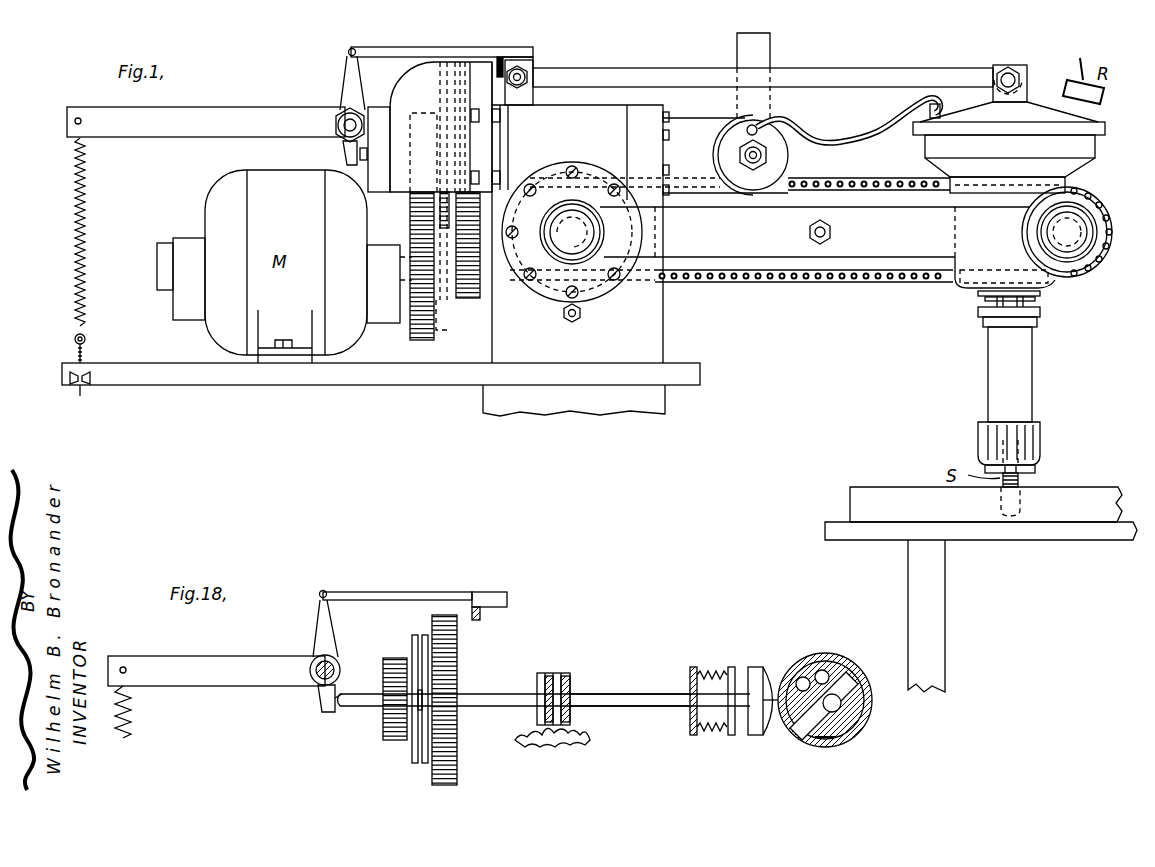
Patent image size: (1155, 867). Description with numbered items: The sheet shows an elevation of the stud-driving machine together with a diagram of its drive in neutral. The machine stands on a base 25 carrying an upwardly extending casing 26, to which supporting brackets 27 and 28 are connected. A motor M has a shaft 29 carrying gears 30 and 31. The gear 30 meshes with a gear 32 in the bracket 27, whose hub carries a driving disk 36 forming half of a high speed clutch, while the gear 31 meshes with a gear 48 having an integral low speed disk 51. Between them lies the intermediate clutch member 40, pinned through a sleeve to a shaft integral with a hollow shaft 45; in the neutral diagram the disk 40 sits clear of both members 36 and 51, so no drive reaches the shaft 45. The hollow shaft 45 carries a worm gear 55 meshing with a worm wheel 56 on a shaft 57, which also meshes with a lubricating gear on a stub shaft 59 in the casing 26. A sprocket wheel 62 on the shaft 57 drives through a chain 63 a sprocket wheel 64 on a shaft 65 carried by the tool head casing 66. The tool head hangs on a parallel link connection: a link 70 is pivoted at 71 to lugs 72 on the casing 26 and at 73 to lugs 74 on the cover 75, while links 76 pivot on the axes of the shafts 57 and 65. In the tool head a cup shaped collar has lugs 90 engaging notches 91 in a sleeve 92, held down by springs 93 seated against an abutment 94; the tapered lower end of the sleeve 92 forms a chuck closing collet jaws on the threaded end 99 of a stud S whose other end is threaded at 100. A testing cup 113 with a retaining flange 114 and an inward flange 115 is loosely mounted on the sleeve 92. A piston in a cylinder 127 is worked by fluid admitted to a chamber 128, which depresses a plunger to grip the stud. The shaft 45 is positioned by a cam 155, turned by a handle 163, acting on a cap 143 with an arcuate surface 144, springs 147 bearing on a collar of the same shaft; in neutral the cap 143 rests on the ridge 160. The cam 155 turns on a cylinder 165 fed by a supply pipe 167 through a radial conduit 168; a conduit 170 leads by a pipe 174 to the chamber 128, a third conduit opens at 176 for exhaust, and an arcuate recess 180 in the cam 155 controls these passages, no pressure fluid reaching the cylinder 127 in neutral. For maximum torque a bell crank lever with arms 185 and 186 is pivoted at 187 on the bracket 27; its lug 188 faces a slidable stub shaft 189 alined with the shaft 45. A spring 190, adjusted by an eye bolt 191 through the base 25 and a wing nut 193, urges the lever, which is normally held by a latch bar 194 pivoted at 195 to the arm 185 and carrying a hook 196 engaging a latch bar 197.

In FIG. 1, the base 25 is at (432, 378).
In FIG. 1, the casing 26 is at (490, 348).
In FIG. 1, the supporting bracket 27 is at (402, 82).
In FIG. 1, the supporting bracket 28 is at (690, 120).
In FIG. 1, the motor shaft 29 is at (448, 261).
In FIG. 1, the gear 30 is at (413, 332).
In FIG. 1, the gear 31 is at (470, 300).
In FIG. 1, the gear 32 is at (431, 127).
In FIG. 18, the gear 32 is at (383, 668).
In FIG. 1, the driving disk 36 is at (441, 100).
In FIG. 18, the driving disk 36 is at (412, 759).
In FIG. 1, the intermediate clutch member 40 is at (447, 100).
In FIG. 18, the intermediate clutch member 40 is at (422, 768).
In FIG. 18, the hollow shaft 45 is at (633, 696).
In FIG. 1, the gear 48 is at (462, 100).
In FIG. 18, the gear 48 is at (458, 674).
In FIG. 1, the clutch disk 51 is at (455, 100).
In FIG. 18, the clutch disk 51 is at (430, 768).
In FIG. 18, the worm gear 55 is at (556, 673).
In FIG. 18, the worm wheel 56 is at (520, 737).
In FIG. 1, the shaft 57 is at (552, 270).
In FIG. 1, the stub shaft 59 is at (568, 325).
In FIG. 1, the sprocket wheel 62 is at (777, 232).
In FIG. 1, the chain 63 is at (820, 283).
In FIG. 1, the sprocket wheel 64 is at (1025, 234).
In FIG. 1, the shaft 65 is at (1105, 200).
In FIG. 1, the tool head casing 66 is at (1090, 265).
In FIG. 1, the link 70 is at (890, 68).
In FIG. 1, the pivot 71 is at (528, 72).
In FIG. 1, the lugs 72 is at (524, 97).
In FIG. 1, the pivot 73 is at (1016, 72).
In FIG. 1, the lugs 74 is at (1025, 90).
In FIG. 1, the cover 75 is at (972, 117).
In FIG. 1, the links 76 is at (893, 247).
In FIG. 1, the lugs 90 is at (1000, 322).
In FIG. 1, the notches 91 is at (1030, 320).
In FIG. 1, the sleeve 92 is at (1034, 400).
In FIG. 1, the springs 93 is at (988, 297).
In FIG. 1, the abutment 94 is at (1035, 297).
In FIG. 1, the threaded end 99 is at (1035, 450).
In FIG. 1, the threaded end 100 is at (1020, 482).
In FIG. 1, the testing sleeve 113 is at (981, 447).
In FIG. 1, the retaining flange 114 is at (982, 428).
In FIG. 1, the inwardly extending flange 115 is at (1020, 470).
In FIG. 1, the cylinder 127 is at (1090, 152).
In FIG. 1, the chamber 128 is at (940, 112).
In FIG. 18, the cap 143 is at (756, 667).
In FIG. 18, the arcuate surface 144 is at (770, 727).
In FIG. 18, the springs 147 is at (712, 668).
In FIG. 18, the cam 155 is at (855, 725).
In FIG. 18, the ridge 160 is at (770, 690).
In FIG. 1, the handle 163 is at (768, 57).
In FIG. 18, the cylinder 165 is at (828, 738).
In FIG. 1, the supply pipe 167 is at (742, 154).
In FIG. 18, the conduit 168 is at (840, 690).
In FIG. 18, the conduit 170 is at (800, 712).
In FIG. 1, the pipe 174 is at (858, 122).
In FIG. 18, the opening 176 is at (797, 678).
In FIG. 18, the recess 180 is at (826, 677).
In FIG. 1, the arm 185 is at (342, 72).
In FIG. 18, the arm 185 is at (316, 622).
In FIG. 1, the arm 186 is at (235, 115).
In FIG. 18, the arm 186 is at (173, 662).
In FIG. 1, the pivot 187 is at (337, 117).
In FIG. 18, the pivot 187 is at (311, 664).
In FIG. 1, the lug 188 is at (343, 152).
In FIG. 18, the lug 188 is at (320, 704).
In FIG. 1, the slidable stub shaft 189 is at (362, 162).
In FIG. 18, the slidable stub shaft 189 is at (332, 712).
In FIG. 1, the spring 190 is at (74, 214).
In FIG. 18, the spring 190 is at (133, 738).
In FIG. 1, the eye bolt 191 is at (87, 338).
In FIG. 1, the wing nut 193 is at (70, 381).
In FIG. 1, the latch bar 194 is at (372, 47).
In FIG. 18, the latch bar 194 is at (415, 592).
In FIG. 1, the pivot 195 is at (348, 50).
In FIG. 18, the pivot 195 is at (326, 590).
In FIG. 1, the hook 196 is at (536, 58).
In FIG. 18, the hook 196 is at (482, 594).
In FIG. 1, the latch bar 197 is at (505, 60).
In FIG. 18, the latch bar 197 is at (482, 617).